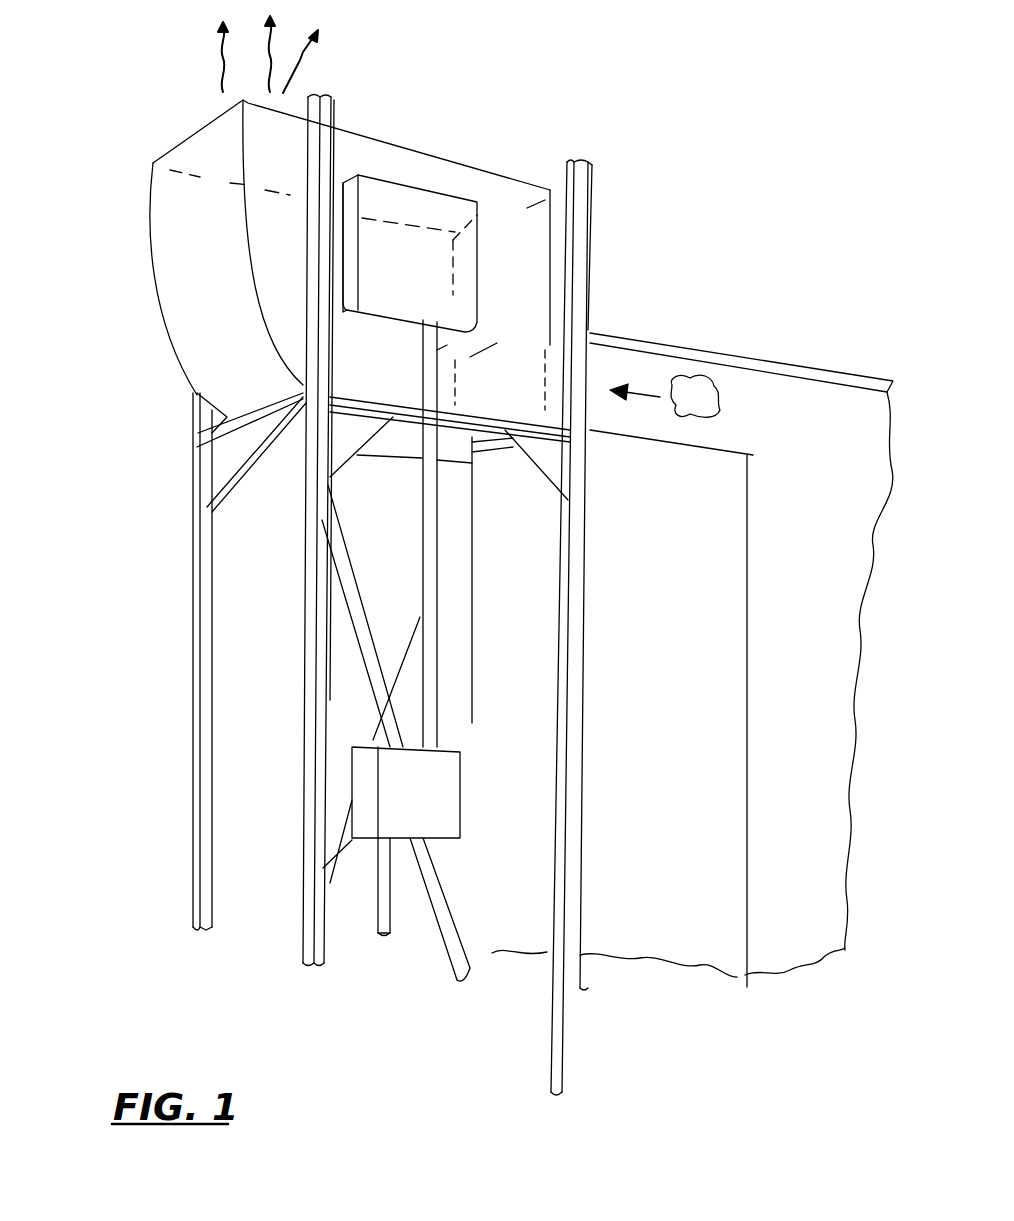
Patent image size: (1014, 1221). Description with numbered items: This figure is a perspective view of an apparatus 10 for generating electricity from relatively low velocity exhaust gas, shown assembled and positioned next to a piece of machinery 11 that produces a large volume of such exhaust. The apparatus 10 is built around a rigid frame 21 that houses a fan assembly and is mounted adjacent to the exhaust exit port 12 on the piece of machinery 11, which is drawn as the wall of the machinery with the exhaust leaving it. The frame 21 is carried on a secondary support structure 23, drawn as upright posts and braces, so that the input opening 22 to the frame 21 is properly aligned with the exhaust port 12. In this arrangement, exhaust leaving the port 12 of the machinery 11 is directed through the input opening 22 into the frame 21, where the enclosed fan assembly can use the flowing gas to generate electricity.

The apparatus 10 is at (108, 119).
The piece of machinery 11 is at (795, 350).
The exhaust exit port 12 is at (688, 385).
The rigid frame 21 is at (150, 216).
The input opening 22 is at (515, 247).
The secondary support structure 23 is at (182, 625).